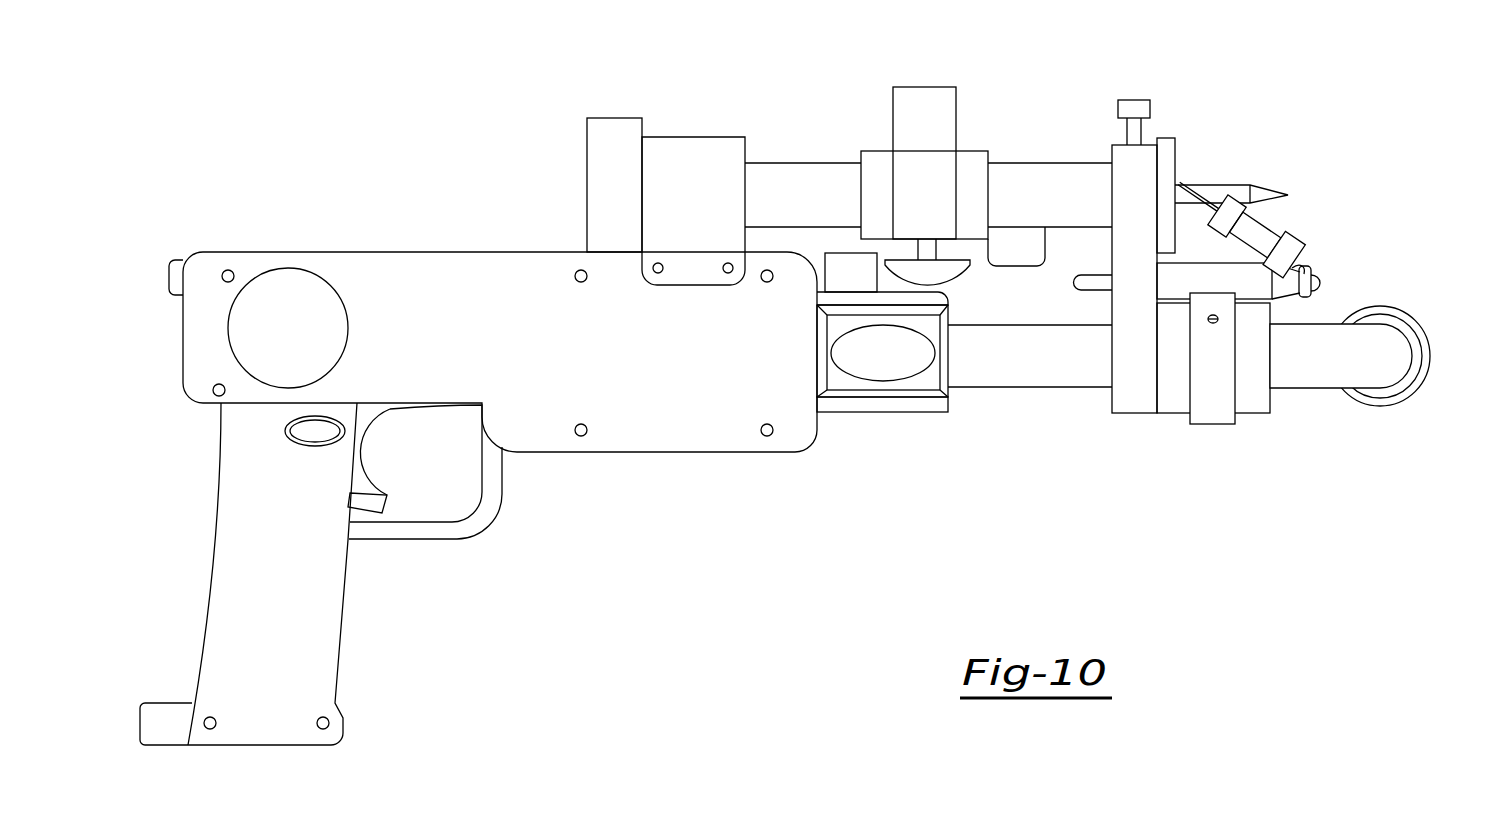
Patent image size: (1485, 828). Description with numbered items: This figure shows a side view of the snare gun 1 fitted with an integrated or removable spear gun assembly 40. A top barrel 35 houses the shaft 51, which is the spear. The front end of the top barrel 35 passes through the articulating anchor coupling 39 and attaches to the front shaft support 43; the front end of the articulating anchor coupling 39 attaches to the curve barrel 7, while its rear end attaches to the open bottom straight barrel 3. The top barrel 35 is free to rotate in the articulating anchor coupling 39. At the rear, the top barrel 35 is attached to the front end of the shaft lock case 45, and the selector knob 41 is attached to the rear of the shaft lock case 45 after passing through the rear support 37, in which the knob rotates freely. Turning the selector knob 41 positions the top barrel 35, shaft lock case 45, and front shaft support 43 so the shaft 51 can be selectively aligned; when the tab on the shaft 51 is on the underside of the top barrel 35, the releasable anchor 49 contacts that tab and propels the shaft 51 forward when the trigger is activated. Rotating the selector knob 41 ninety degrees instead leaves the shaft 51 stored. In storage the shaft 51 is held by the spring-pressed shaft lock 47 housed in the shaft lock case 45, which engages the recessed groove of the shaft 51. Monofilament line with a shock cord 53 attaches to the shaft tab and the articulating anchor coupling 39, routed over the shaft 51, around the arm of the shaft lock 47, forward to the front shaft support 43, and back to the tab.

The handle housing / grip 1 is at (340, 633).
The open bottom straight barrel 3 is at (1030, 388).
The curve barrel 7 is at (1317, 389).
The top barrel 35 is at (1043, 163).
The rear support 37 is at (692, 137).
The articulating anchor coupling 39 is at (1116, 145).
The spear gun assembly 40 is at (613, 88).
The selector knob 41 is at (586, 187).
The front shaft support 43 is at (1176, 147).
The shaft lock case 45 is at (925, 87).
The shaft lock 47 is at (960, 268).
The releasable anchor 49 is at (883, 412).
The shaft 51 is at (1262, 187).
The shock cord 53 is at (1297, 237).